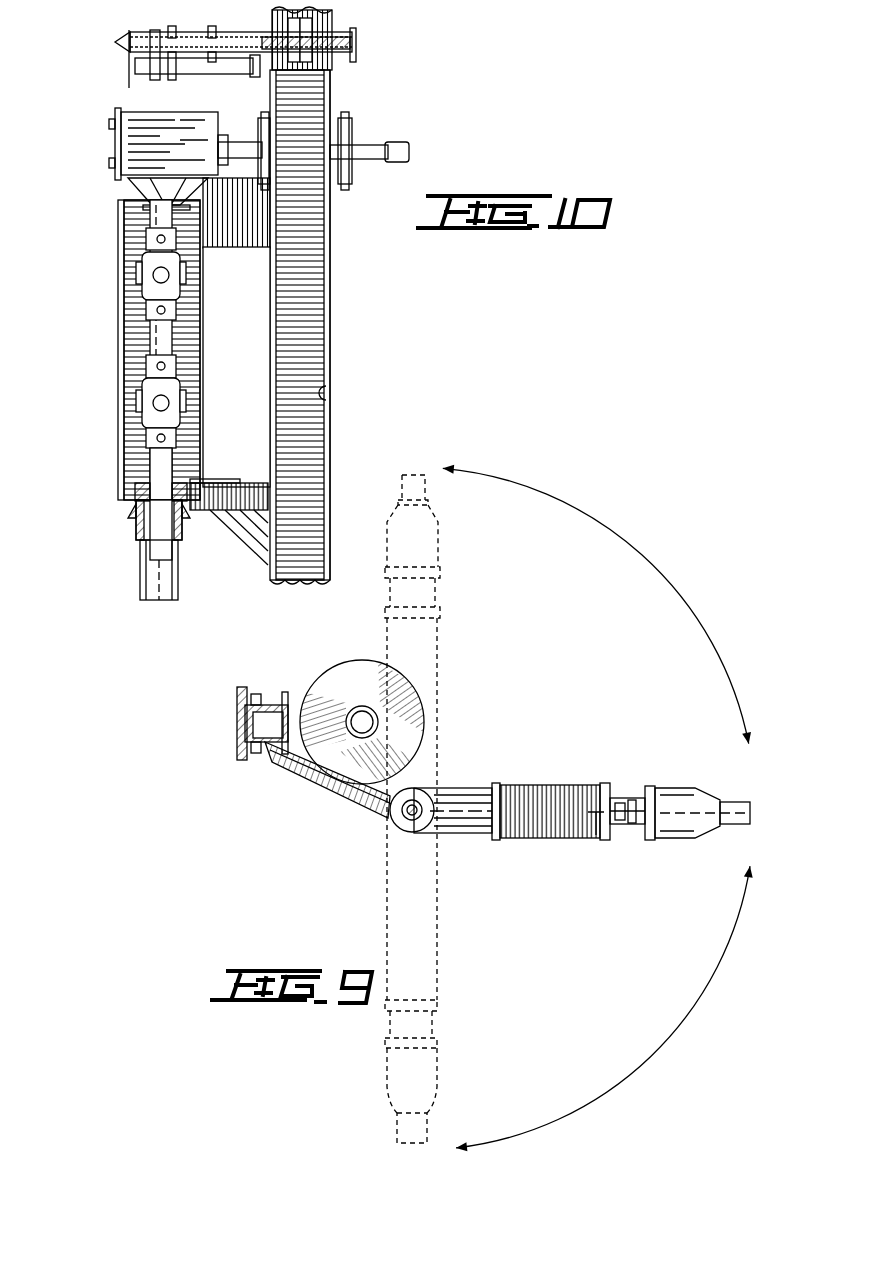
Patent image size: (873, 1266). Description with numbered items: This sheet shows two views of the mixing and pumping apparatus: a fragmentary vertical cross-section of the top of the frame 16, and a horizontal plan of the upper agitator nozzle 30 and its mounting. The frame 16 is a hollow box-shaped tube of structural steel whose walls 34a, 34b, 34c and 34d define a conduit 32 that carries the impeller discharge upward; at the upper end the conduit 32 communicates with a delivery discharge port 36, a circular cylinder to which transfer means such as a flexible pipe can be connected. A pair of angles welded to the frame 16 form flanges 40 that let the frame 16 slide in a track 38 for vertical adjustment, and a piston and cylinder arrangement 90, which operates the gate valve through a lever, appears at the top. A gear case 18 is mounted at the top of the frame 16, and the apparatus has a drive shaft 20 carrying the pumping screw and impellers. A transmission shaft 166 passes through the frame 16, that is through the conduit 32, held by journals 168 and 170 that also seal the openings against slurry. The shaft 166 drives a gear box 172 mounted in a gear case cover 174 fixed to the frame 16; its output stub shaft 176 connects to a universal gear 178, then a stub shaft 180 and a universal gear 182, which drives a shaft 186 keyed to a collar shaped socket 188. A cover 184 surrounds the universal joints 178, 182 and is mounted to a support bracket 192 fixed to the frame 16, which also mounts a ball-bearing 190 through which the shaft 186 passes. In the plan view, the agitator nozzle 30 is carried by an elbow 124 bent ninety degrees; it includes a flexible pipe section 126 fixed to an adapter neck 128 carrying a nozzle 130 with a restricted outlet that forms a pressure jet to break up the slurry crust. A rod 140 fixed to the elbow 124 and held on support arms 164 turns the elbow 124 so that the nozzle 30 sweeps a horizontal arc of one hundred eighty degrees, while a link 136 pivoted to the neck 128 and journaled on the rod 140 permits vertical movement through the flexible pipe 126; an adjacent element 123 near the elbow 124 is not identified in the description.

In FIG. 10, the frame 16 is at (340, 428).
In FIG. 9, the frame 16 is at (228, 750).
In FIG. 10, the gear case 18 is at (127, 131).
In FIG. 10, the drive shaft 20 is at (178, 582).
In FIG. 9, the agitator jet nozzle 30 is at (530, 795).
In FIG. 10, the conduit 32 is at (330, 387).
In FIG. 10, the wall 34a is at (332, 308).
In FIG. 9, the wall 34a is at (274, 705).
In FIG. 9, the wall 34b is at (302, 716).
In FIG. 10, the wall 34c is at (267, 333).
In FIG. 9, the wall 34c is at (267, 752).
In FIG. 9, the wall 34d is at (242, 727).
In FIG. 10, the delivery discharge port 36 is at (332, 20).
In FIG. 9, the track 38 is at (238, 702).
In FIG. 9, the flanges 40 is at (258, 700).
In FIG. 10, the piston and cylinder arrangement 90 is at (250, 38).
In FIG. 9, the cylinder body 123 is at (414, 797).
In FIG. 9, the elbow 124 is at (402, 823).
In FIG. 9, the flexible pipe section 126 is at (513, 788).
In FIG. 9, the adapter neck 128 is at (621, 770).
In FIG. 9, the nozzle 130 is at (703, 790).
In FIG. 9, the link 136 is at (596, 814).
In FIG. 9, the rod 140 is at (398, 818).
In FIG. 9, the support arms 164 is at (335, 797).
In FIG. 10, the transmission shaft 166 is at (240, 142).
In FIG. 10, the journal 168 is at (262, 135).
In FIG. 10, the journal 170 is at (352, 130).
In FIG. 10, the gear box 172 is at (150, 125).
In FIG. 10, the gear case cover 174 is at (145, 190).
In FIG. 10, the stub shaft 176 is at (162, 222).
In FIG. 10, the universal gear 178 is at (150, 275).
In FIG. 10, the stub shaft 180 is at (160, 345).
In FIG. 10, the universal gear 182 is at (150, 404).
In FIG. 10, the cover 184 is at (158, 452).
In FIG. 10, the shaft 186 is at (146, 549).
In FIG. 10, the collar shaped socket 188 is at (184, 510).
In FIG. 10, the ball-bearing 190 is at (140, 493).
In FIG. 10, the support bracket 192 is at (231, 500).